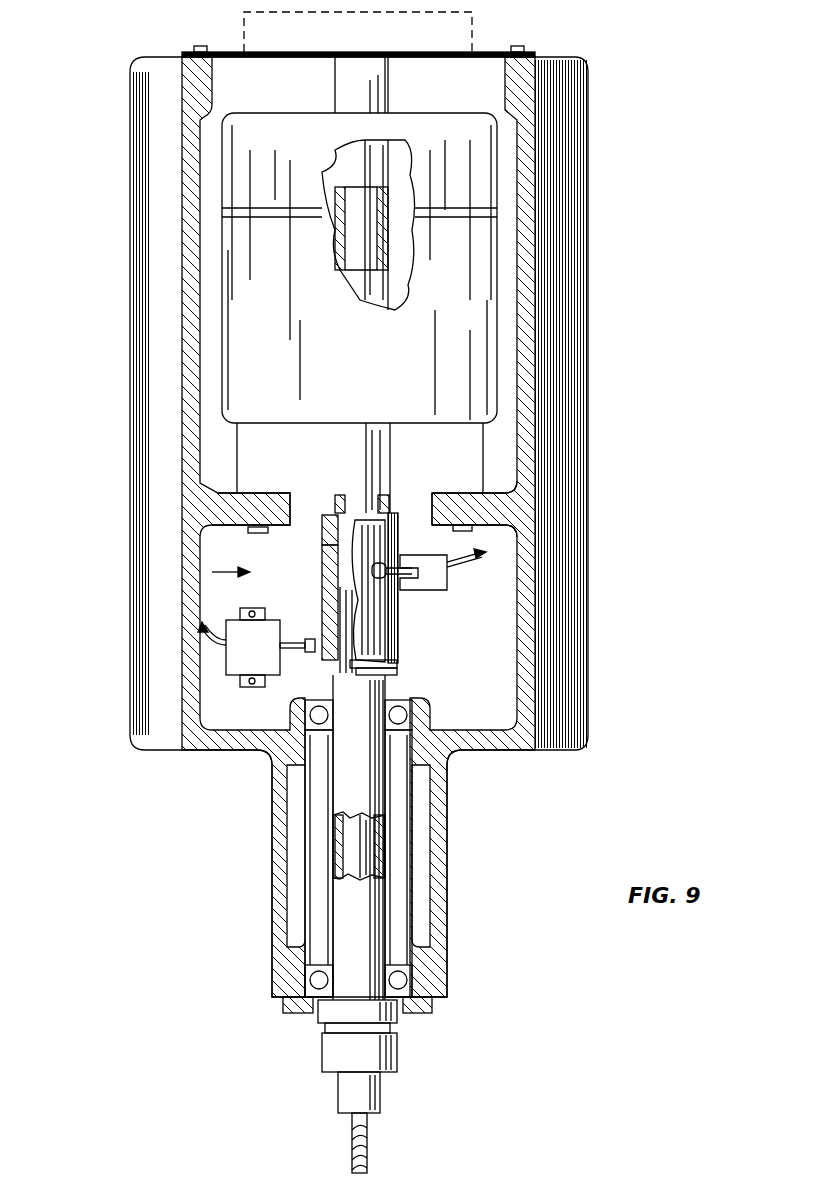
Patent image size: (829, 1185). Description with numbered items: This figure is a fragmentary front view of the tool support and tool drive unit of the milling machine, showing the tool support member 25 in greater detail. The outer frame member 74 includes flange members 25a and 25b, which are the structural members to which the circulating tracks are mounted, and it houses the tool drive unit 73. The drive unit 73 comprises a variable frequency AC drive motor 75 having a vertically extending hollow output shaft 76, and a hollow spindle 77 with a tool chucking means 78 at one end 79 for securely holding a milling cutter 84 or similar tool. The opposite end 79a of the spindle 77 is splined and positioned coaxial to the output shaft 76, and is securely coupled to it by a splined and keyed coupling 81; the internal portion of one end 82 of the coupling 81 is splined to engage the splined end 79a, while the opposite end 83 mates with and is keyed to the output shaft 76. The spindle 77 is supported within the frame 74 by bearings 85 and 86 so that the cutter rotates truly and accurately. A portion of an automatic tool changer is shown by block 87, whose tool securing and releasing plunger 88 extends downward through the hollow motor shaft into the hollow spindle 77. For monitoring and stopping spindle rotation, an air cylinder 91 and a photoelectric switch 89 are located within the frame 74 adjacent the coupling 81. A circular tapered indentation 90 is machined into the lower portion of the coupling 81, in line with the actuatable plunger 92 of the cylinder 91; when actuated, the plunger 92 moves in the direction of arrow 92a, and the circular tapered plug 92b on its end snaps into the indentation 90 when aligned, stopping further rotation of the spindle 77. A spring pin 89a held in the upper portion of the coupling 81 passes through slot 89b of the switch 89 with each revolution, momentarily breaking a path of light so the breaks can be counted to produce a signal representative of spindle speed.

The tool support member 25 is at (632, 176).
The flange member 25a is at (160, 645).
The flange member 25b is at (572, 550).
The tool drive unit 73 is at (512, 517).
The outer frame member 74 is at (588, 382).
The variable frequency AC drive motor 75 is at (222, 355).
The hollow output shaft 76 is at (392, 500).
The hollow spindle 77 is at (375, 772).
The tool chucking means 78 is at (395, 1050).
The end of hollow spindle 79 is at (340, 1005).
The splined end of hollow spindle 79a is at (392, 671).
The splined and keyed coupling 81 is at (322, 550).
The end of coupling 82 is at (397, 665).
The opposite end of coupling 83 is at (328, 516).
The milling cutter 84 is at (352, 1142).
The bearing 85 is at (410, 717).
The bearing 86 is at (410, 978).
The automatic tool changer block 87 is at (462, 33).
The plunger 88 is at (353, 235).
The photoelectric switch 89 is at (438, 572).
The spring pin 89a is at (405, 580).
The slot 89b is at (410, 585).
The circular tapered indentation 90 is at (317, 701).
The air cylinder 91 is at (265, 630).
The actuatable plunger 92 is at (292, 641).
The arrow 92a is at (228, 560).
The circular tapered plug 92b is at (312, 660).